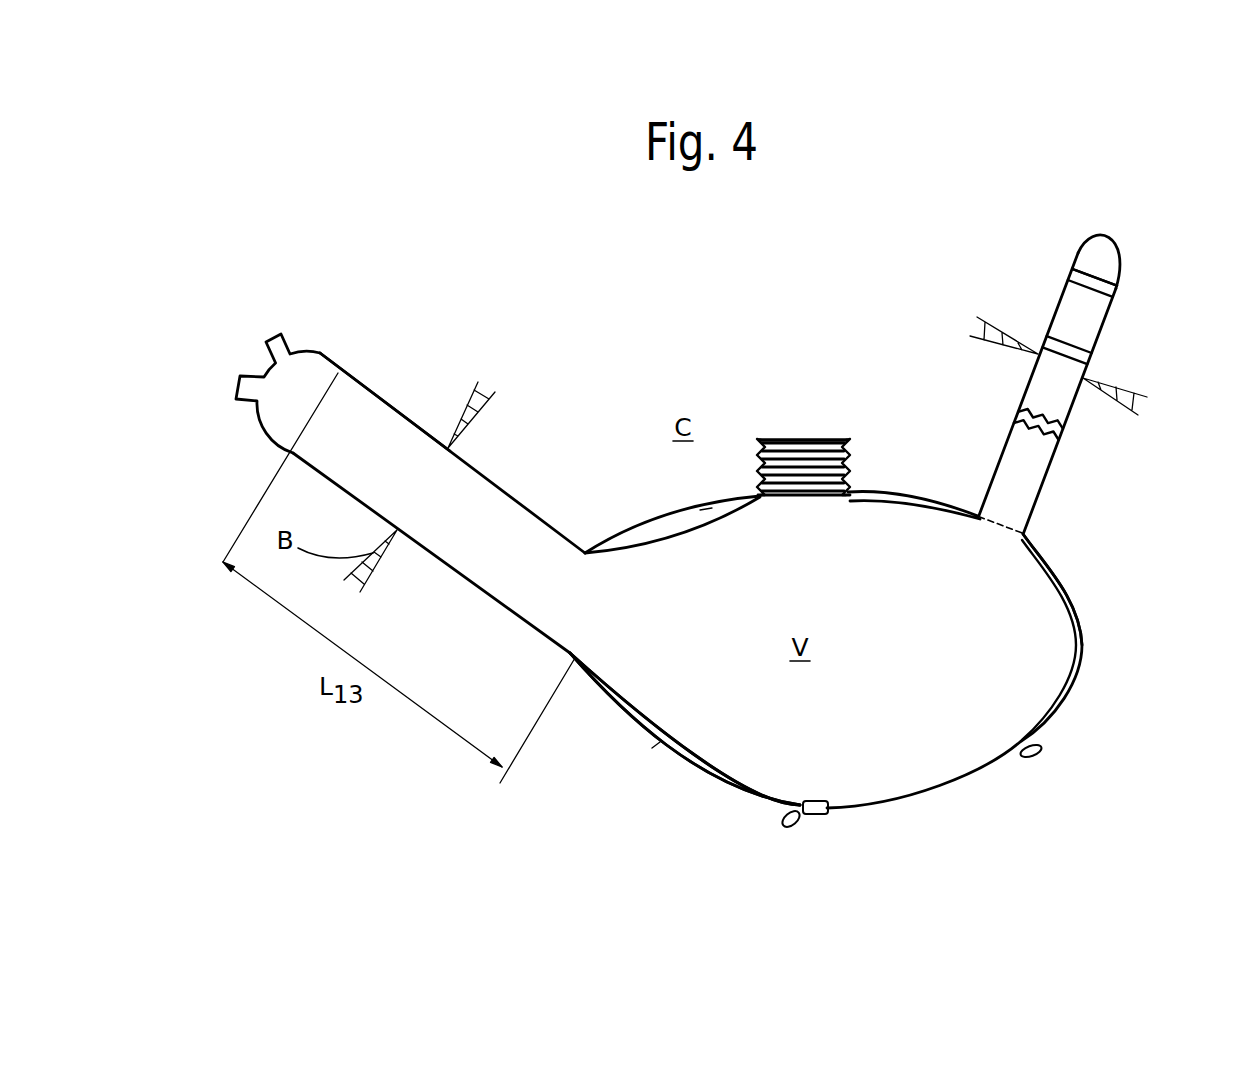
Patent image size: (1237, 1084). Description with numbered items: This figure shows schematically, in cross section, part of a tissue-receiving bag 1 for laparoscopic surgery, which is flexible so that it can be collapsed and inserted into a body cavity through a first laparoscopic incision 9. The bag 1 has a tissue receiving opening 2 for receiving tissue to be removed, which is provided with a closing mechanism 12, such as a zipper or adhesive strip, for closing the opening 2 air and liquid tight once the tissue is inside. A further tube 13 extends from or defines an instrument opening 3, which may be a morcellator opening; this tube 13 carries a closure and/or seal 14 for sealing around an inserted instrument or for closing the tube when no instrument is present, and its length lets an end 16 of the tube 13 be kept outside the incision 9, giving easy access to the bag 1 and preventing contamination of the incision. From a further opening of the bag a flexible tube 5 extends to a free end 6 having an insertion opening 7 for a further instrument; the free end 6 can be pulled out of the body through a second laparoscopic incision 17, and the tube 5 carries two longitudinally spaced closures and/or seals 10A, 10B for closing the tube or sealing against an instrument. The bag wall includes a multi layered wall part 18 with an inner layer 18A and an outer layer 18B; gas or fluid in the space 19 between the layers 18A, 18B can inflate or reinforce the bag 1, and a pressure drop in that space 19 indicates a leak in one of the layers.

The tissue-receiving bag 1 is at (1122, 602).
The tissue receiving opening 2 is at (947, 787).
The instrument opening 3 is at (300, 407).
The flexible tube 5 is at (847, 441).
The free end 6 is at (1117, 241).
The insertion opening 7 is at (808, 412).
The laparoscopic incision 9 is at (448, 432).
The closure and/or seal 10A is at (1077, 342).
The closure and/or seal 10B is at (1083, 276).
The closing mechanism 12 is at (818, 815).
The further tube 13 is at (503, 520).
The closure and/or seal 14 is at (317, 367).
The end of the tube 16 is at (372, 350).
The second laparoscopic incision 17 is at (1030, 341).
The multi layered wall part 18 is at (718, 806).
The inner layer 18A is at (663, 540).
The outer layer 18B is at (620, 530).
The space 19 is at (717, 510).